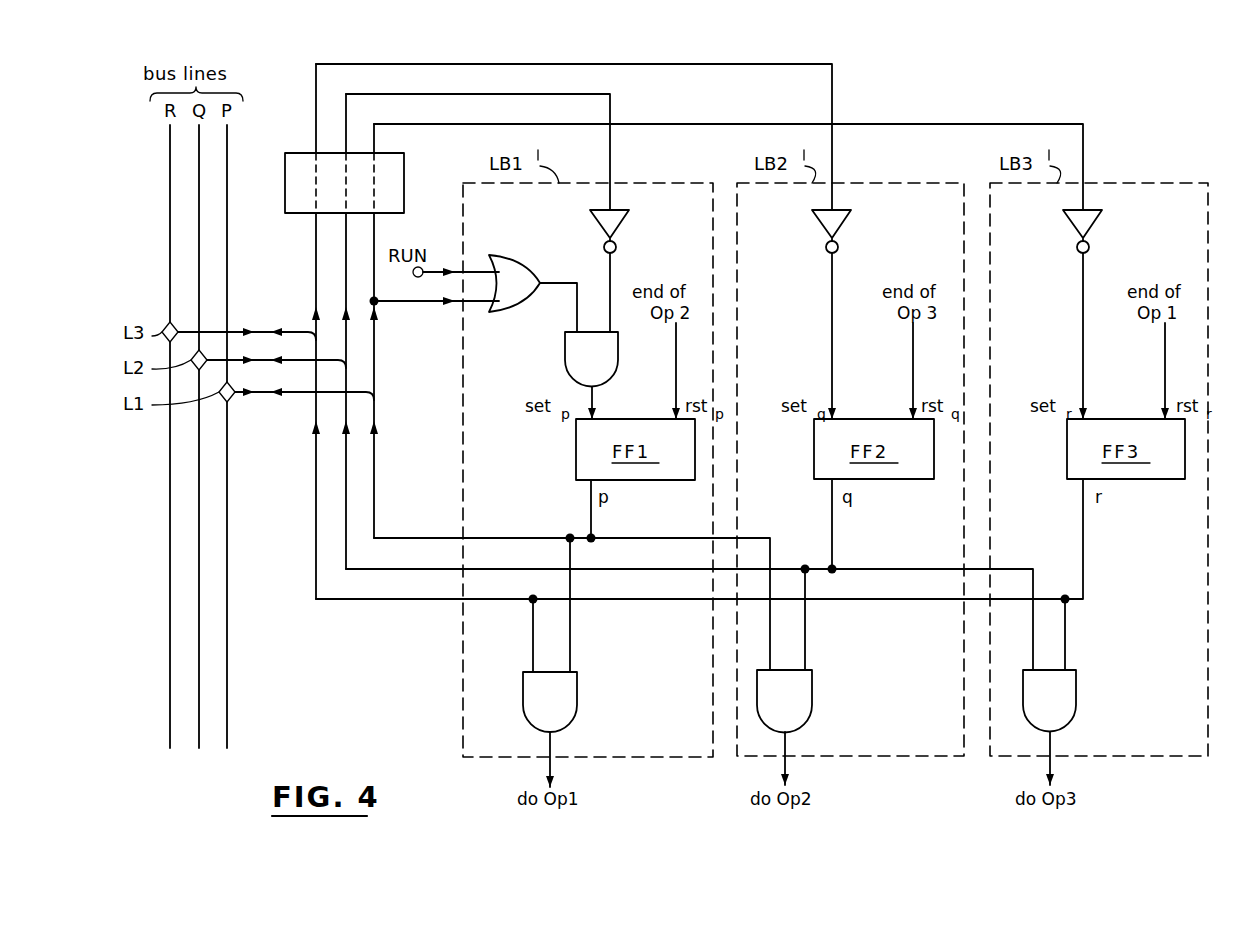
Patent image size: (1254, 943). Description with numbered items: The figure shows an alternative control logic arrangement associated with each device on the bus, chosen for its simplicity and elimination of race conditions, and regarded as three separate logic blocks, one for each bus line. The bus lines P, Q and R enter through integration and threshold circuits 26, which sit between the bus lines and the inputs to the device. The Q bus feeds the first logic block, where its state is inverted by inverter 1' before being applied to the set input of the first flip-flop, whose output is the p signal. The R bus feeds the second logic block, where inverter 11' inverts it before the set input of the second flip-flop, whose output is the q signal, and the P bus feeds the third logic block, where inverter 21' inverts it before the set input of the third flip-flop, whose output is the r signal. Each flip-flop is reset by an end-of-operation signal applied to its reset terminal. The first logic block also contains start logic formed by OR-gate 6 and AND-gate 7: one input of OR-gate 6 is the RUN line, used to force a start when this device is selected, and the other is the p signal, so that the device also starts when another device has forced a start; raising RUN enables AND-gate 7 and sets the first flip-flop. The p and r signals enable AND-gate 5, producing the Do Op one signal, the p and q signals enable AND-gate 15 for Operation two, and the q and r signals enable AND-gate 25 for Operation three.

The integration and threshold circuits 26 is at (299, 152).
The OR-gate 6 is at (520, 295).
The AND-gate 7 is at (598, 374).
The inverter 1' is at (620, 271).
The inverter 11' is at (848, 314).
The inverter 21' is at (1105, 314).
The AND-gate 5 is at (557, 710).
The AND-gate 15 is at (798, 710).
The AND-gate 25 is at (1062, 710).